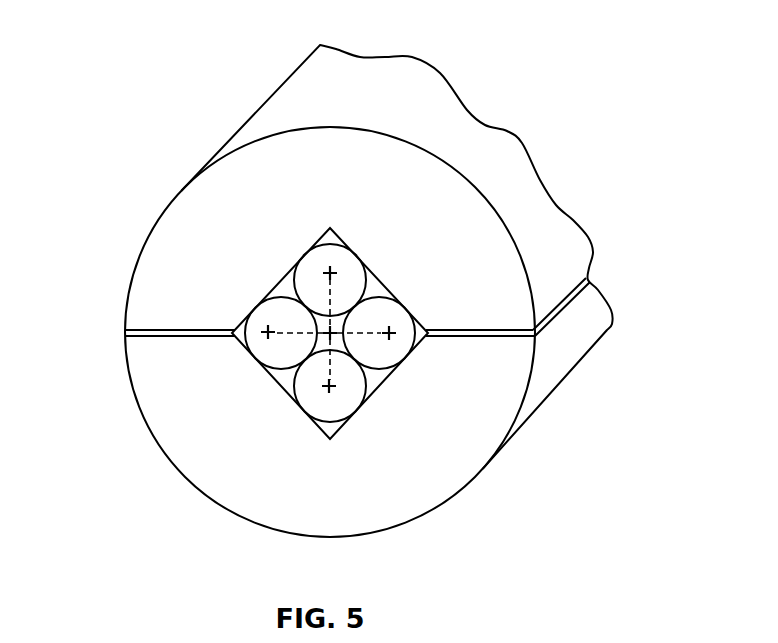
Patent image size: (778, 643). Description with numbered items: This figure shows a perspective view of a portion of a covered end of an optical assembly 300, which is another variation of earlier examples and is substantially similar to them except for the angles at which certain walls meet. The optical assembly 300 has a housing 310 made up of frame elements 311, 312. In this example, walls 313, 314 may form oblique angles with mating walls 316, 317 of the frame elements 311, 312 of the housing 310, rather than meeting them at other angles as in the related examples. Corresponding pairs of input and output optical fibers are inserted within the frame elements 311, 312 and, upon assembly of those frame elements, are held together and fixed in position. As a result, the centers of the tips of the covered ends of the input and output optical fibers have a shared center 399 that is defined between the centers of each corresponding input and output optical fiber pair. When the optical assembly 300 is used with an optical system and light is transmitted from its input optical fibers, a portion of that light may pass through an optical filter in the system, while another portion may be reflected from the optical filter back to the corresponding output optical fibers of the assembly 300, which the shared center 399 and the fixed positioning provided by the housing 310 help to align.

The optical assembly 300 is at (127, 30).
The housing 310 is at (603, 273).
The frame element 311 is at (517, 163).
The frame element 312 is at (392, 510).
The wall 313 is at (373, 280).
The wall 314 is at (290, 280).
The mating wall 316 is at (172, 330).
The mating wall 317 is at (153, 338).
The shared center 399 is at (330, 333).